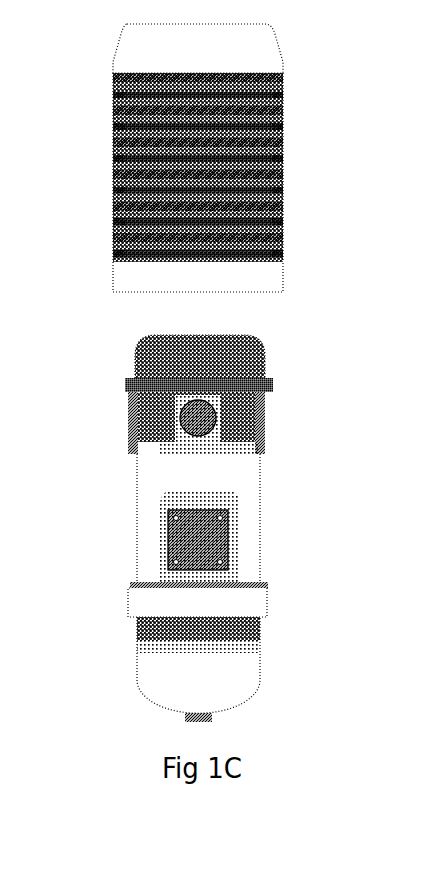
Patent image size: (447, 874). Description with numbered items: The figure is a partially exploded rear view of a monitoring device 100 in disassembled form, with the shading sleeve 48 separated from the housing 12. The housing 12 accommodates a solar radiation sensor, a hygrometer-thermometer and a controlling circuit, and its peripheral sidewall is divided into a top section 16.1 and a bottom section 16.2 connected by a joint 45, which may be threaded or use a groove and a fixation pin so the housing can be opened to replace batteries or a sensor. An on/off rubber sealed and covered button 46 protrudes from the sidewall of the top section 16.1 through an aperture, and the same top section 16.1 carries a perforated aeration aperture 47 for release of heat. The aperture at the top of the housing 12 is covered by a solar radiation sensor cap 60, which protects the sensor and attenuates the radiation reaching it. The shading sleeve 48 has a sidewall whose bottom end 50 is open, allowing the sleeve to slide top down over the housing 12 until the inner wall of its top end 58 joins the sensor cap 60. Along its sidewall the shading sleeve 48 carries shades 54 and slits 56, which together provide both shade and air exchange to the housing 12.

The monitoring device 100 is at (72, 192).
The shading sleeve 48 is at (308, 181).
The top end of the shading sleeve 58 is at (180, 24).
The slits 56 is at (257, 91).
The shades 54 is at (257, 117).
The bottom end of the shading sleeve 50 is at (221, 285).
The housing 12 is at (280, 542).
The solar radiation sensor cap 60 is at (152, 348).
The perforated aeration aperture 47 is at (182, 428).
The top section of the housing 16.1 is at (160, 452).
The on/off button 46 is at (196, 543).
The joint 45 is at (142, 612).
The bottom section of the housing 16.2 is at (228, 652).